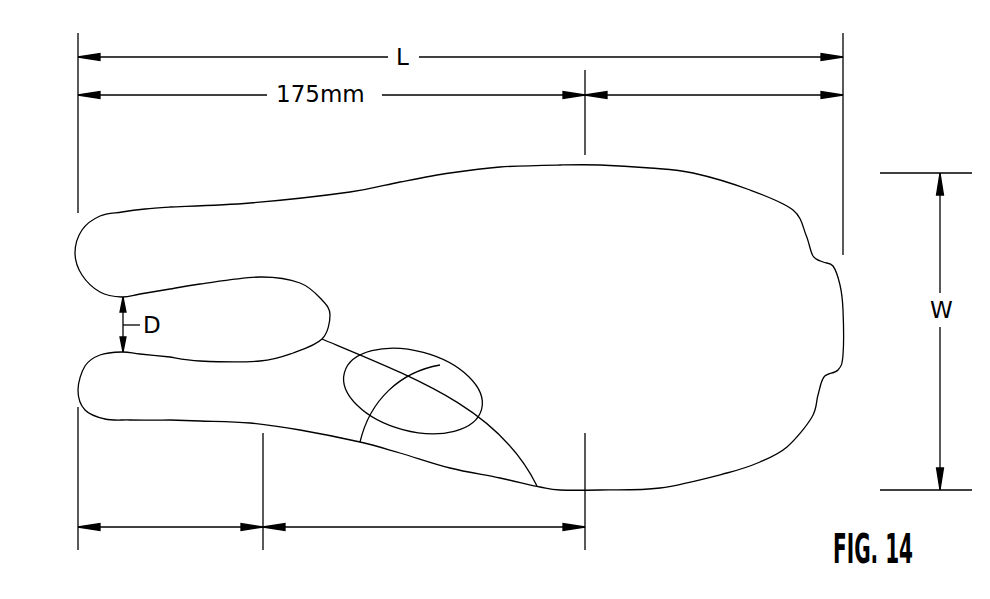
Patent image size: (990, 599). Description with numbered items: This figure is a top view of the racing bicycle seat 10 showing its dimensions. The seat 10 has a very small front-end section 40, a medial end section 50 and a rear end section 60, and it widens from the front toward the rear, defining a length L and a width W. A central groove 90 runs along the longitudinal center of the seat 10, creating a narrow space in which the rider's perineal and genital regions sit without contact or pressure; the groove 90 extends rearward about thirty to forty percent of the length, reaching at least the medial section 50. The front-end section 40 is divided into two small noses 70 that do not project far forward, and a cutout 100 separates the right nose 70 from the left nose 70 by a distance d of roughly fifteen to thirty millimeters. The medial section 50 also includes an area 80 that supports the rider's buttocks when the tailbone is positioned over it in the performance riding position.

The seat 10 is at (845, 406).
The front-end section 40 is at (187, 527).
The medial end section 50 is at (417, 527).
The rear end section 60 is at (677, 98).
The noses 70 is at (165, 230).
The area 80 is at (555, 465).
The central groove 90 is at (263, 334).
The cutout 100 is at (105, 325).